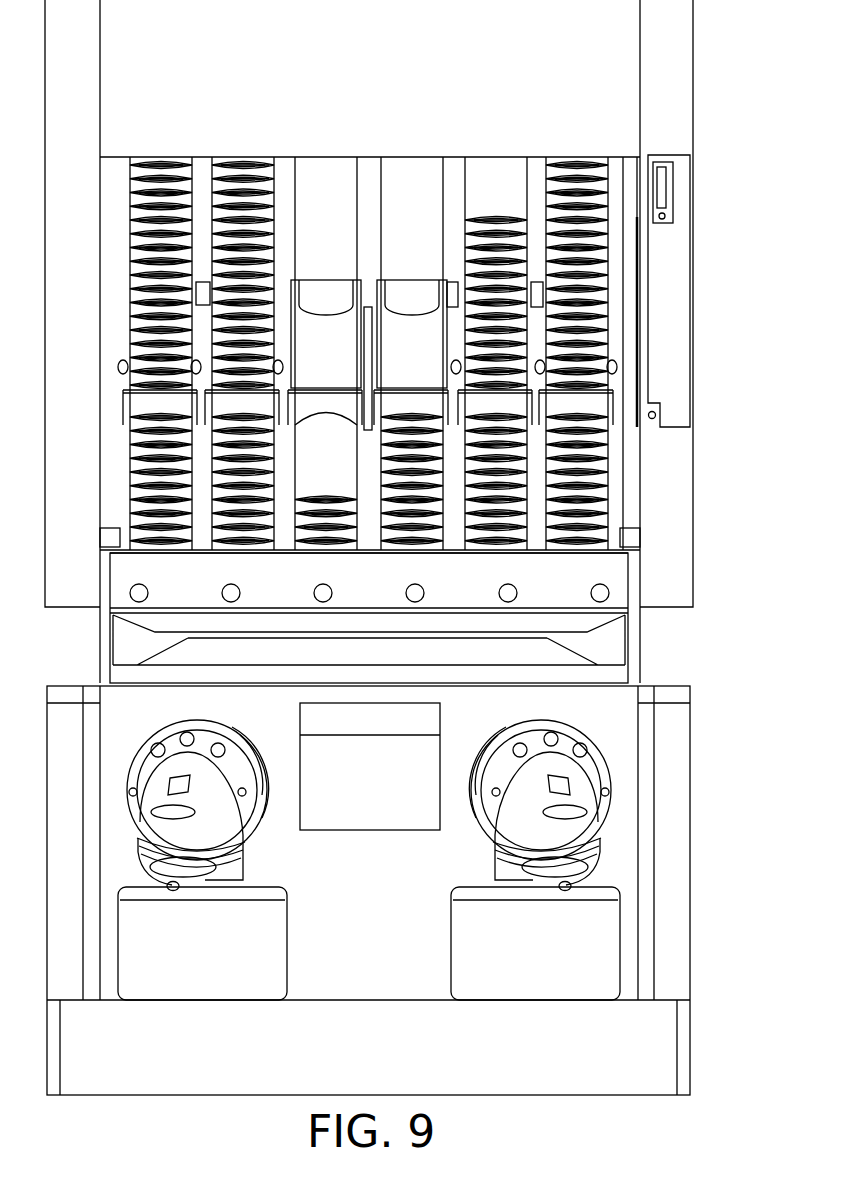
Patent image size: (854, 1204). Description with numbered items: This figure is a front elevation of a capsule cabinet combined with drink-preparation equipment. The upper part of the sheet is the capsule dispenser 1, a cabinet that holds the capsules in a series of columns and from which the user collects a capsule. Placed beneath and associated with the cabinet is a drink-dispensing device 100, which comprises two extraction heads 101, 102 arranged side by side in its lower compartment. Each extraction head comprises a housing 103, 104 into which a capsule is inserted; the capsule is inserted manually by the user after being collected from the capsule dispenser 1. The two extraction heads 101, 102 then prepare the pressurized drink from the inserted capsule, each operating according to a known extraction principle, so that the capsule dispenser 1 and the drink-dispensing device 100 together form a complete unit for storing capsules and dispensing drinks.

The capsule dispenser 1 is at (713, 674).
The drink-dispensing device 100 is at (411, 890).
The extraction head 101 is at (234, 860).
The extraction head 102 is at (504, 860).
The housing 103 is at (178, 813).
The housing 104 is at (560, 813).